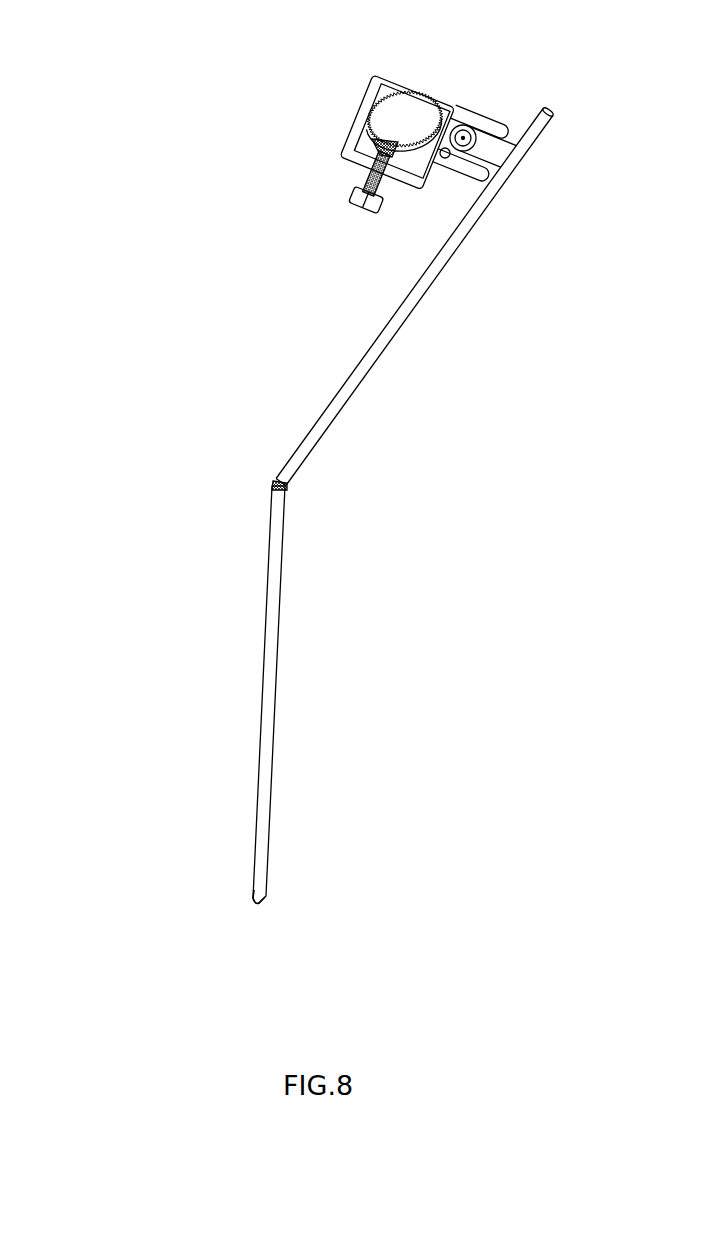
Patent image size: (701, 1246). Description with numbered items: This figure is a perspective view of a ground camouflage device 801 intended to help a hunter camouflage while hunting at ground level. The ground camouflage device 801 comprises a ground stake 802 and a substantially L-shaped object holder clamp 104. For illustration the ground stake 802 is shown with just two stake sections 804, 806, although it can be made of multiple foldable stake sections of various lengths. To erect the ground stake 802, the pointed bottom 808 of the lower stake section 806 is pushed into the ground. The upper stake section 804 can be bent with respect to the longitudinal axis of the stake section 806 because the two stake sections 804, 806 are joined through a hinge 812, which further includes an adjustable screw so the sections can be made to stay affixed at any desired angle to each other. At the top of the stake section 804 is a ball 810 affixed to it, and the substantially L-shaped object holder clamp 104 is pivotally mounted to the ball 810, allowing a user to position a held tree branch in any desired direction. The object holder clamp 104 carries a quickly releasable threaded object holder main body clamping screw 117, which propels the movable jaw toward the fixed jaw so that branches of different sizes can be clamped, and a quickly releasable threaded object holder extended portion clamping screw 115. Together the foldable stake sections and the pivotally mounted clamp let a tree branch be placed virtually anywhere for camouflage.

The ground camouflage device 801 is at (107, 112).
The substantially L-shaped object holder clamp 104 is at (391, 72).
The threaded object holder main body clamping screw 117 is at (363, 182).
The ball 810 is at (465, 137).
The threaded object holder extended portion clamping screw 115 is at (442, 164).
The ground stake 802 is at (353, 438).
The stake section 804 is at (455, 250).
The hinge 812 is at (274, 481).
The stake section 806 is at (265, 658).
The pointed bottom 808 is at (258, 900).